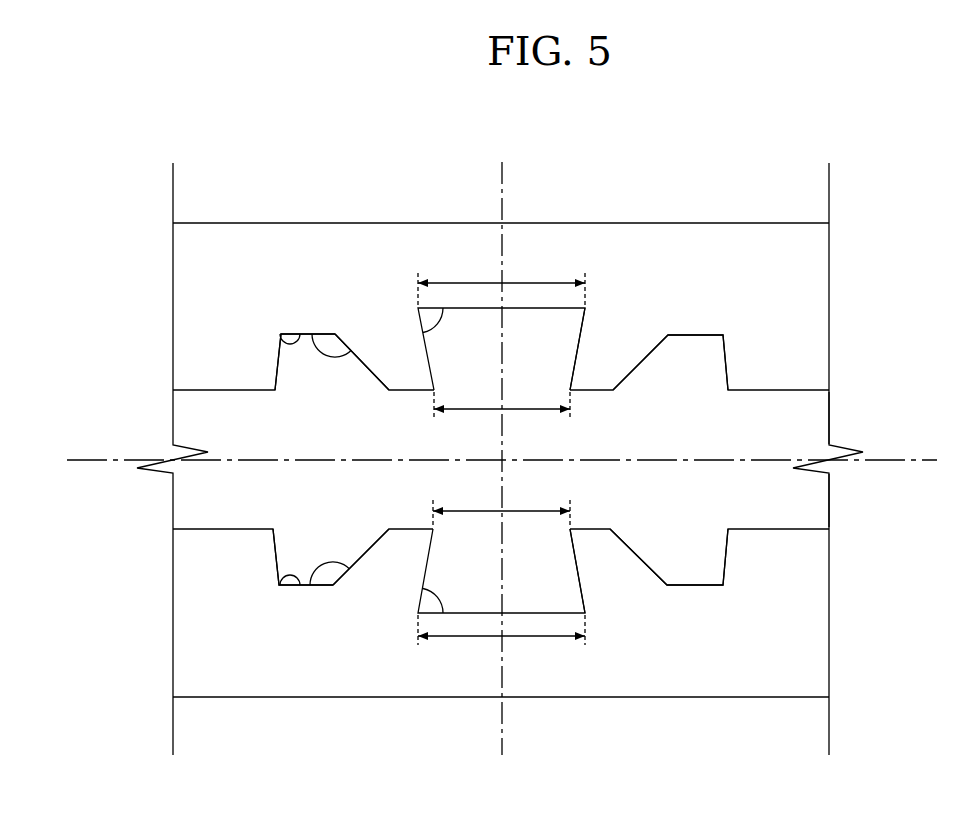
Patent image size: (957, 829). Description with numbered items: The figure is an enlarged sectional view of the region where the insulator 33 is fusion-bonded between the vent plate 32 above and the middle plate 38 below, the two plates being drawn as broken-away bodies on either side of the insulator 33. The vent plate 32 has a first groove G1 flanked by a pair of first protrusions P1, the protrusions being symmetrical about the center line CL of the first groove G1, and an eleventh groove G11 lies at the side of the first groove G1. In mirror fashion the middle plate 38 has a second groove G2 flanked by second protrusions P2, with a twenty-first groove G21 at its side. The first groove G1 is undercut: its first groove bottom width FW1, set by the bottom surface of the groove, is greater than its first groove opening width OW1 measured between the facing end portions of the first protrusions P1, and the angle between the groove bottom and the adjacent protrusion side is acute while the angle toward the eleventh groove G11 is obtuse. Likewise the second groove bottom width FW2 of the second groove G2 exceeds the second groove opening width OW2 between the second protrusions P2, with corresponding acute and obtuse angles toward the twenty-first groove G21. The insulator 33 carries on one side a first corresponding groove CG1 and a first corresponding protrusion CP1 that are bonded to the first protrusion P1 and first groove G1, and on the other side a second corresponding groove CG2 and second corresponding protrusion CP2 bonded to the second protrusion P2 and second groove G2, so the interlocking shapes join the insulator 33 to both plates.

The vent plate 32 is at (795, 297).
The insulator 33 is at (795, 423).
The middle plate 38 is at (795, 607).
The center line CL is at (502, 180).
The first groove G1 is at (492, 308).
The second groove G2 is at (492, 613).
The eleventh groove G11 is at (281, 345).
The twenty-first groove G21 is at (281, 575).
The first protrusion P1 is at (405, 380).
The second protrusion P2 is at (405, 540).
The first corresponding protrusion CP1 is at (558, 336).
The second corresponding protrusion CP2 is at (557, 583).
The first corresponding groove CG1 is at (593, 389).
The second corresponding groove CG2 is at (588, 529).
The first groove bottom width FW1 is at (501, 282).
The second groove bottom width FW2 is at (501, 640).
The first groove opening width OW1 is at (502, 415).
The second groove opening width OW2 is at (501, 507).